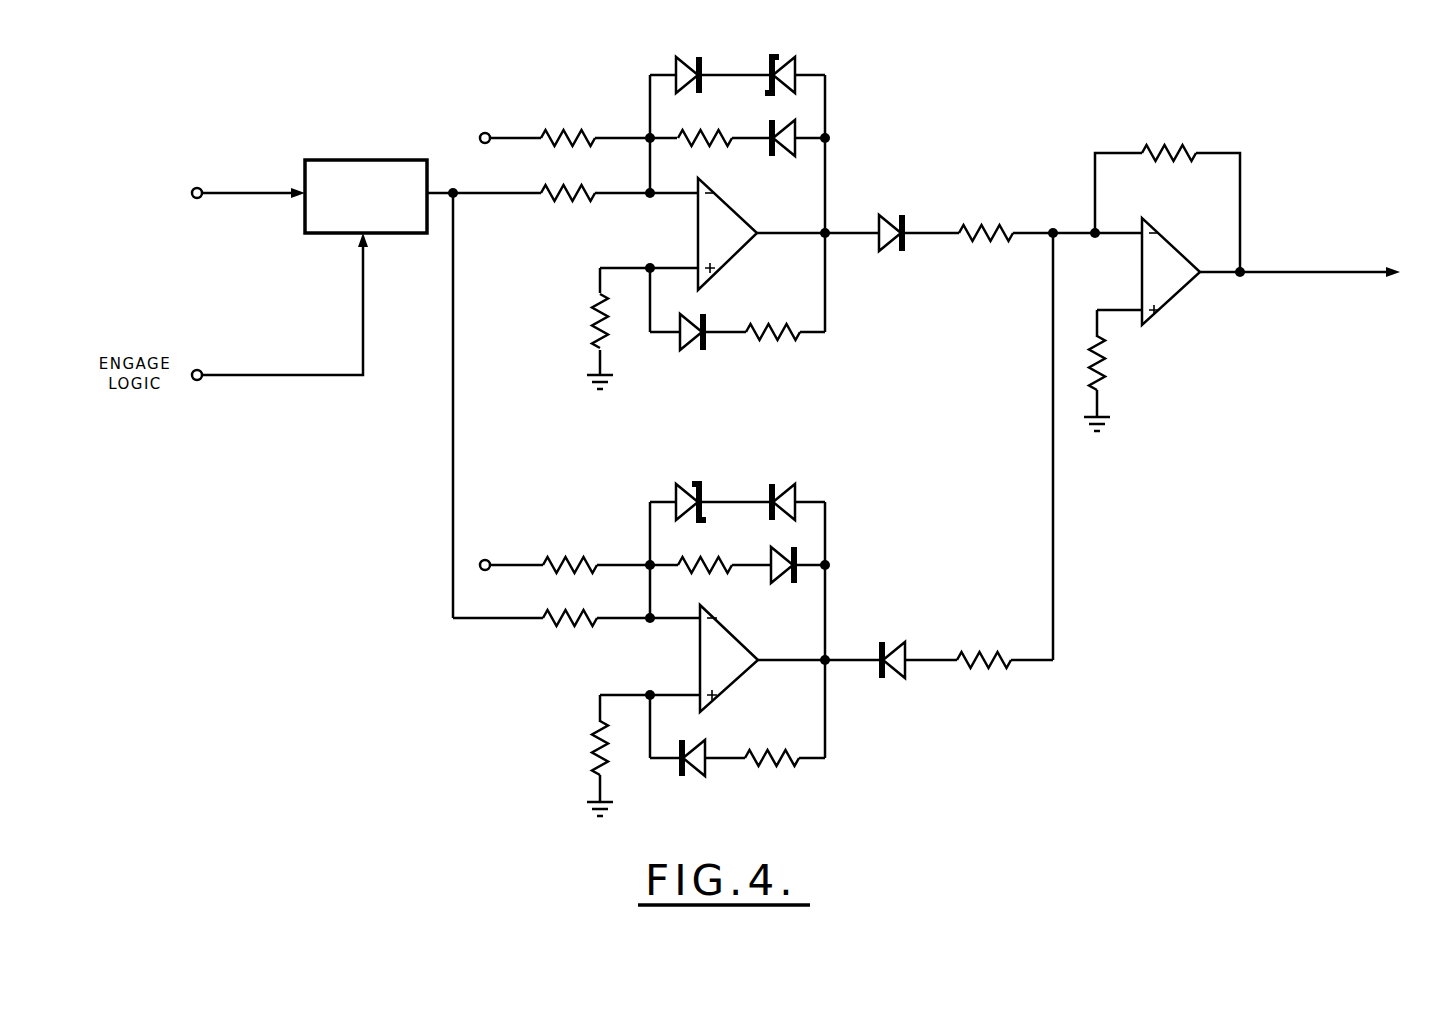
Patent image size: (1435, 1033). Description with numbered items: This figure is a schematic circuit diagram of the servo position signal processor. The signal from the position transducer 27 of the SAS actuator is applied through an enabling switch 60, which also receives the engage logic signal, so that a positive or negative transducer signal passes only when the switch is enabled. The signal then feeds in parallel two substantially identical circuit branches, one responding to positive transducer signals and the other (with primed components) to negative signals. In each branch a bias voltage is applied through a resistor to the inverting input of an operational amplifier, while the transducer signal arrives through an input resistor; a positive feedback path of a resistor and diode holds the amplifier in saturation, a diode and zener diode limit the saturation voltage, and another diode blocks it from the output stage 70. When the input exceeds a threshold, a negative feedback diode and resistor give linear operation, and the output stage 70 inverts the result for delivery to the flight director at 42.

The position transducer 27 is at (110, 226).
The output destination 42 is at (1420, 316).
The enabling switch 60 is at (364, 160).
The output stage 70 is at (1192, 299).